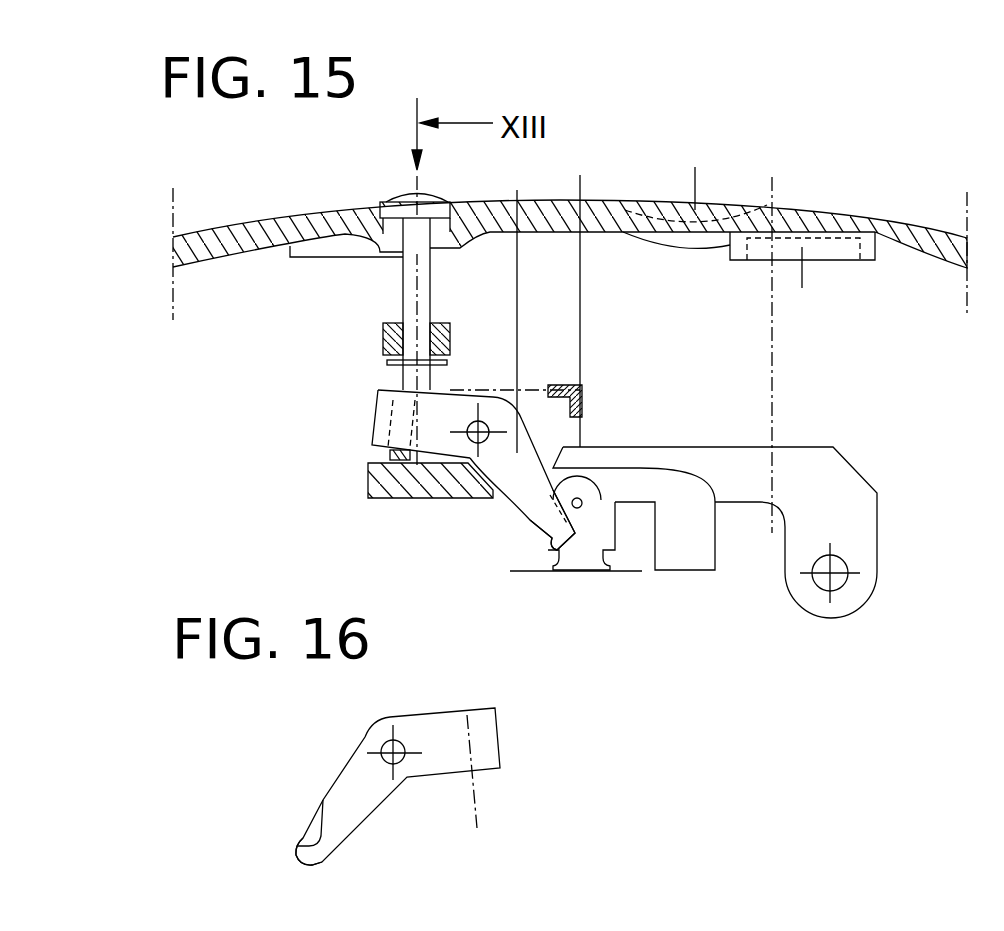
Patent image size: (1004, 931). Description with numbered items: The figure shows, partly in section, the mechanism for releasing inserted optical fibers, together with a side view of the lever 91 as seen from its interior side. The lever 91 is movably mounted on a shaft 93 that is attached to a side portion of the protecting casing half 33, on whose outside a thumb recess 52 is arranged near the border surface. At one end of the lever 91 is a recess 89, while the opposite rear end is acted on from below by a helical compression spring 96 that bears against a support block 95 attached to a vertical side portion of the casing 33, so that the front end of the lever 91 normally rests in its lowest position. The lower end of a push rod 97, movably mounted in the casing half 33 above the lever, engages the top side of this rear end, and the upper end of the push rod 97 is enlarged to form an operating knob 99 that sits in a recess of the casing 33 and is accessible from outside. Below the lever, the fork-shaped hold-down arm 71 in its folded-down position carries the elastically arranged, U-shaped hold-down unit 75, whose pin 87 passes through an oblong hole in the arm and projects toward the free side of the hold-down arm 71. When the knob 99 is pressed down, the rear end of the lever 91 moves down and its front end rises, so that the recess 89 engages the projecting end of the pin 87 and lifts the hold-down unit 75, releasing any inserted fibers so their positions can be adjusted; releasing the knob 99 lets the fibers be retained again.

In FIG. 15, the casing half 33 is at (880, 228).
In FIG. 15, the recess 52 is at (735, 208).
In FIG. 15, the operating knob 99 is at (400, 207).
In FIG. 15, the push rod 97 is at (404, 291).
In FIG. 15, the helical compression spring 96 is at (390, 455).
In FIG. 15, the lever 91 is at (476, 432).
In FIG. 16, the lever 91 is at (437, 725).
In FIG. 15, the shaft 93 is at (478, 421).
In FIG. 15, the support block 95 is at (445, 490).
In FIG. 15, the recess 89 is at (560, 510).
In FIG. 16, the recess 89 is at (312, 830).
In FIG. 15, the pin 87 is at (573, 503).
In FIG. 15, the hold-down unit 75 is at (567, 560).
In FIG. 15, the hold-down arm 71 is at (855, 548).